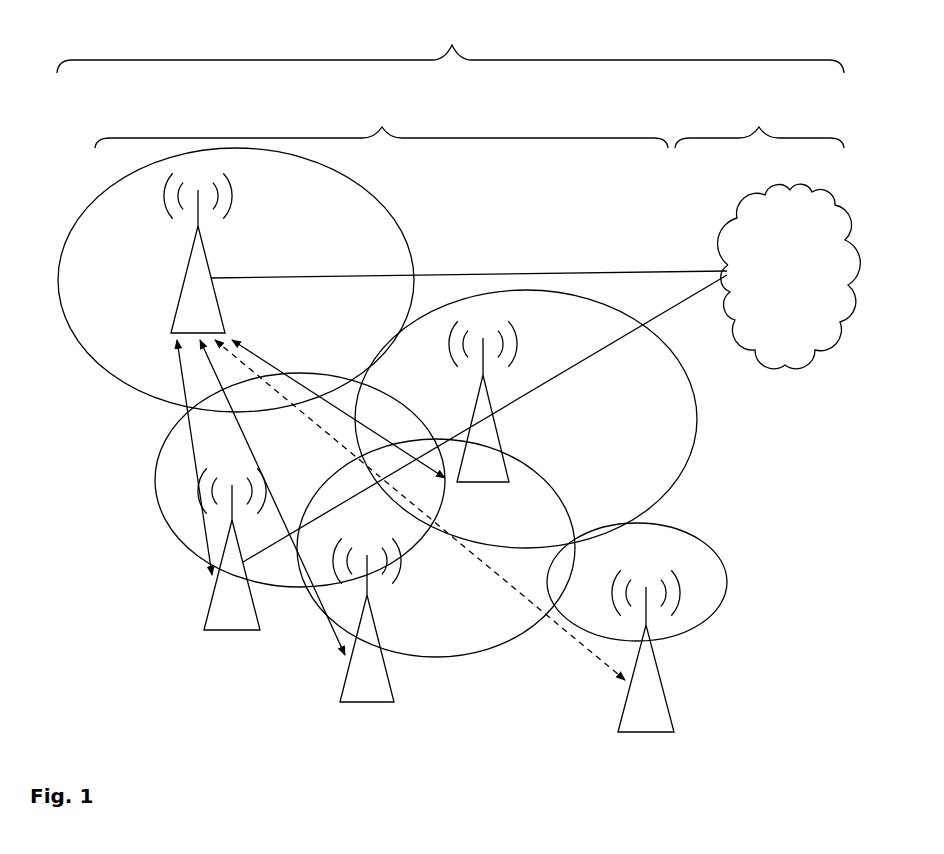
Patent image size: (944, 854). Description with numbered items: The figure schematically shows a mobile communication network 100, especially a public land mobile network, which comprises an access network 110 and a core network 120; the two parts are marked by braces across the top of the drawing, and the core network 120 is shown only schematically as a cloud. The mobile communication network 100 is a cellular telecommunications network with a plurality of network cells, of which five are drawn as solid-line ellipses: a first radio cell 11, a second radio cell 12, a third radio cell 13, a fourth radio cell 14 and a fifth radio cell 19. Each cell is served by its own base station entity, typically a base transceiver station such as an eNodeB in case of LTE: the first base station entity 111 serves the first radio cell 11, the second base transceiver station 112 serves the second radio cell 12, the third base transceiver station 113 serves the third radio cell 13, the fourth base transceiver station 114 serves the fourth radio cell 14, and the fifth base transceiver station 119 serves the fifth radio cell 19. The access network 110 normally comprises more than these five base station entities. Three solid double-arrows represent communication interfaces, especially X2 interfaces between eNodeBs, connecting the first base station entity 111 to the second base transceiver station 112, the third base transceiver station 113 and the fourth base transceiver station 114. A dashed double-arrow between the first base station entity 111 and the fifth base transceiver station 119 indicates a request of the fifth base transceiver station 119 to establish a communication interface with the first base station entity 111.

The mobile communication network 100 is at (450, 46).
The access network 110 is at (381, 126).
The core network 120 is at (759, 126).
The first radio cell 11 is at (126, 385).
The second radio cell 12 is at (695, 402).
The third radio cell 13 is at (157, 487).
The fourth radio cell 14 is at (443, 658).
The fifth radio cell 19 is at (720, 607).
The first base station entity 111 is at (198, 253).
The second base transceiver station 112 is at (483, 401).
The third base transceiver station 113 is at (232, 549).
The fourth base transceiver station 114 is at (367, 620).
The fifth base transceiver station 119 is at (646, 651).